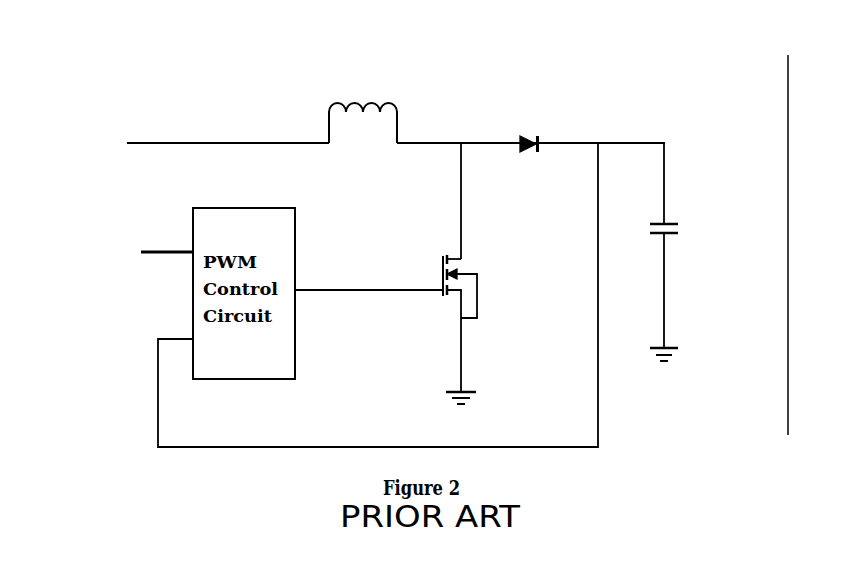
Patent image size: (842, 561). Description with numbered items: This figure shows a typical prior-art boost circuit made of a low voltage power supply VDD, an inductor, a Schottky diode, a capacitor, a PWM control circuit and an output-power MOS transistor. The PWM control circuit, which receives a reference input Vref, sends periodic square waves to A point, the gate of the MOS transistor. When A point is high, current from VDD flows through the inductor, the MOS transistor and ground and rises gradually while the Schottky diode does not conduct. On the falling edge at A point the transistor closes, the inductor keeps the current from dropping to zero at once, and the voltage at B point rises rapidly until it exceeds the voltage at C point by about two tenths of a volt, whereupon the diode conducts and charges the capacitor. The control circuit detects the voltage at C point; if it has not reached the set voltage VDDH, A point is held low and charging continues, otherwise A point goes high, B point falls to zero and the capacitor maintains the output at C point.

The low voltage power supply VDD is at (200, 123).
The reference voltage input Vref is at (162, 235).
The A point A is at (369, 273).
The B point B is at (531, 181).
The C point C is at (660, 232).
The set voltage VDDH is at (724, 158).